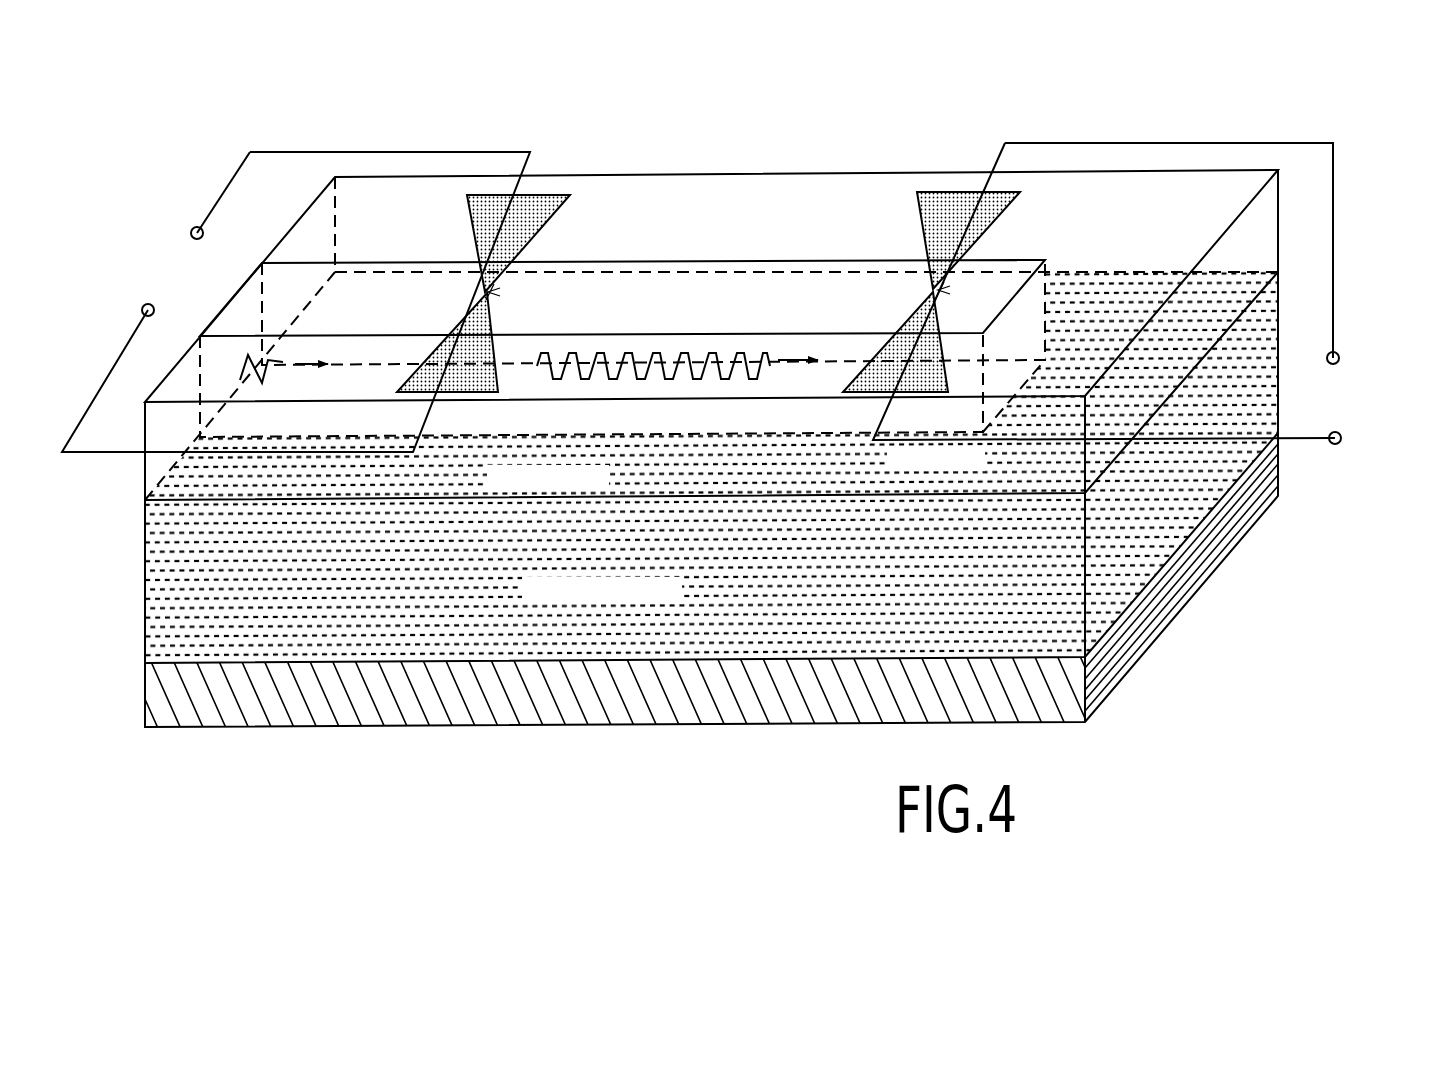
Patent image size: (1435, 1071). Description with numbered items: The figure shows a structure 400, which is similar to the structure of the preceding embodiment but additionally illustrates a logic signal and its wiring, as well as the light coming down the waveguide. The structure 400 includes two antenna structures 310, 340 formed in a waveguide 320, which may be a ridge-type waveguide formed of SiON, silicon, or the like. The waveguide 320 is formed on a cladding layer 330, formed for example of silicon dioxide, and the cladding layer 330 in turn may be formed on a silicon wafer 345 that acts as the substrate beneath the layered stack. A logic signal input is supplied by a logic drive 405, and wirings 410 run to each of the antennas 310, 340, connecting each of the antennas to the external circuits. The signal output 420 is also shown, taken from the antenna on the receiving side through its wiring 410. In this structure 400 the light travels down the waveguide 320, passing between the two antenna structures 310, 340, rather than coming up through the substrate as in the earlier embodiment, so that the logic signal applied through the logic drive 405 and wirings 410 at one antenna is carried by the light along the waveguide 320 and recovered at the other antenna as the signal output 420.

The structure 400 is at (736, 437).
The logic drive 405 is at (150, 271).
The wirings 410 is at (305, 152).
The signal output 420 is at (1367, 398).
The antenna structure 310 is at (558, 192).
The antenna structure 340 is at (936, 188).
The waveguide 320 is at (1048, 323).
The cladding layer 330 is at (673, 604).
The silicon wafer 345 is at (594, 714).